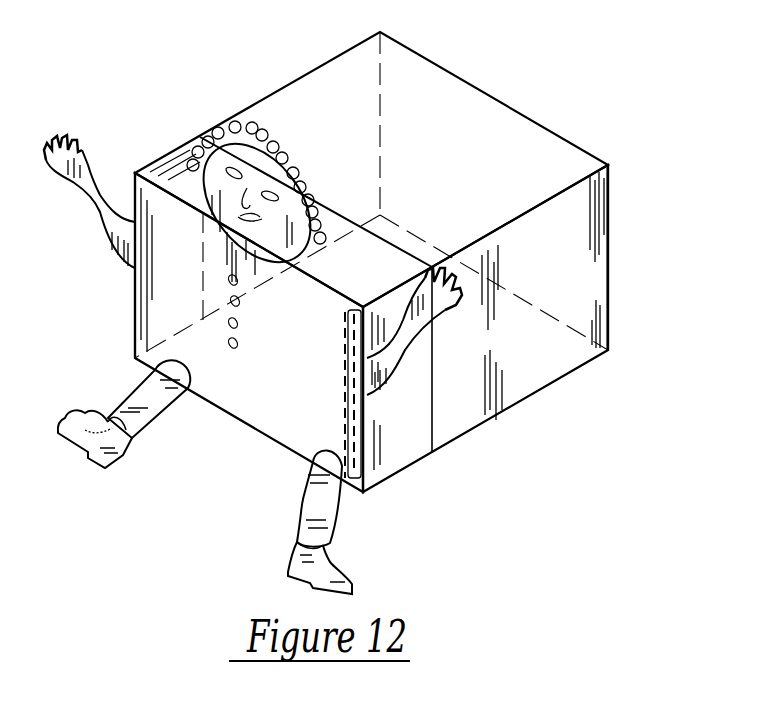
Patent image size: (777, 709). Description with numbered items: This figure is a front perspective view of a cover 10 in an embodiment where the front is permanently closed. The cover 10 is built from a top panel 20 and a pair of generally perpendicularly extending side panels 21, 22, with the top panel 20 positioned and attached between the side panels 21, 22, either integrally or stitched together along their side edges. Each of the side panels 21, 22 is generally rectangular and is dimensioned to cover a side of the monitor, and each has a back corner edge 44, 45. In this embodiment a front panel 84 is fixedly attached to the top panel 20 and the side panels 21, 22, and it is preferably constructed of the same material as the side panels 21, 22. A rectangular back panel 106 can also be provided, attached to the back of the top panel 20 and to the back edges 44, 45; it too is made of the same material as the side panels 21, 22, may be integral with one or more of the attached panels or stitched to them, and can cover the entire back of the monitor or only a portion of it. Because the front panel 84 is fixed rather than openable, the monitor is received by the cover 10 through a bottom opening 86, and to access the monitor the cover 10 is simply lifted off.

The cover 10 is at (652, 200).
The top panel 20 is at (487, 127).
The side panel 21 is at (148, 293).
The side panel 22 is at (598, 318).
The back corner edge 44 is at (378, 75).
The back corner edge 45 is at (610, 272).
The front panel 84 is at (577, 308).
The bottom opening 86 is at (398, 443).
The back panel 106 is at (582, 165).